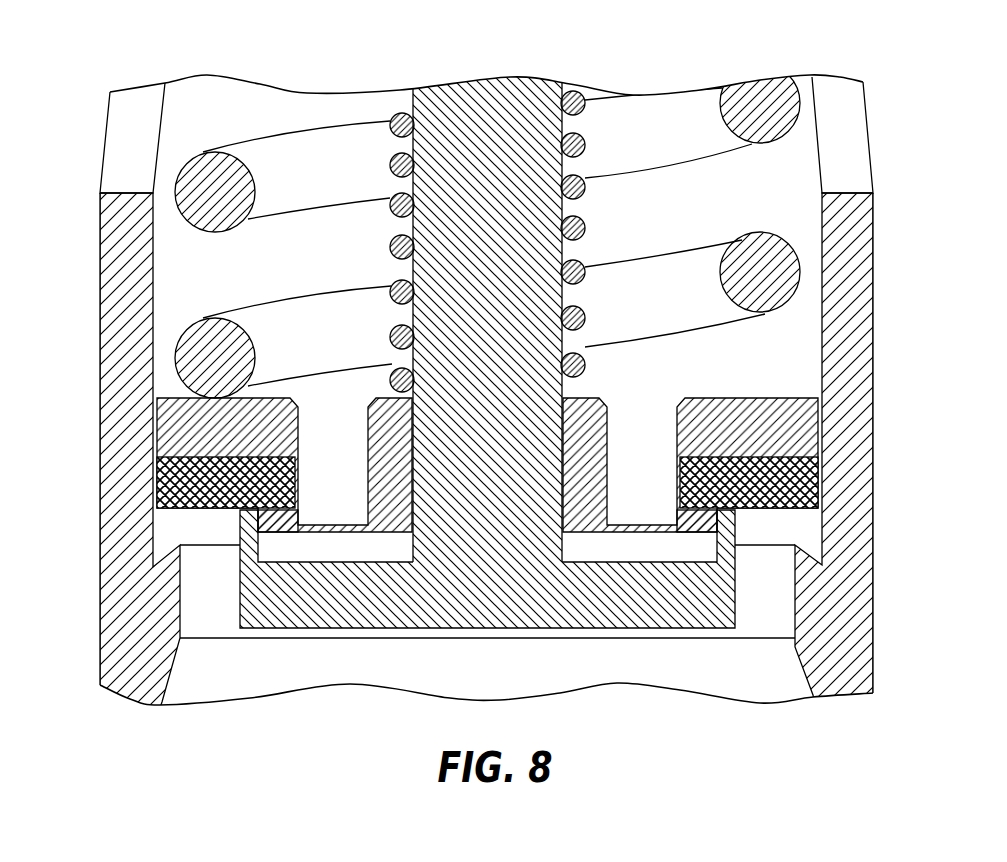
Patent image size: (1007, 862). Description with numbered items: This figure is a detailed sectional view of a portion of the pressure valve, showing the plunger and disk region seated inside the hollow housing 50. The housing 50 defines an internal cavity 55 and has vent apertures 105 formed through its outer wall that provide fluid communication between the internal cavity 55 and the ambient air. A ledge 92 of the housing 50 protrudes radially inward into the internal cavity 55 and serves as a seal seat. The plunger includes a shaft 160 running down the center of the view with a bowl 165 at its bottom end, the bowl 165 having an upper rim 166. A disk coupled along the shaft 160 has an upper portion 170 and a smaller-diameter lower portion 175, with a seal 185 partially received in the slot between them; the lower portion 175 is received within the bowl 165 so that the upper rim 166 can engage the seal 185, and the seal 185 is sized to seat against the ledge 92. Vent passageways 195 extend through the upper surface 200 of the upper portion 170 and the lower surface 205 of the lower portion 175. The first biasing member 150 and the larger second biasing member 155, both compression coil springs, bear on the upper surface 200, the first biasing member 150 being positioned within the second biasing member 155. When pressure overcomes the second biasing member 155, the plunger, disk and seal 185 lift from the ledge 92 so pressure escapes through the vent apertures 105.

The housing 50 is at (873, 378).
The internal cavity 55 is at (258, 108).
The ledge 92 is at (797, 590).
The vent apertures 105 is at (128, 152).
The first biasing member 150 is at (390, 160).
The second biasing member 155 is at (687, 130).
The shaft 160 is at (482, 128).
The bowl 165 is at (323, 597).
The upper rim 166 is at (237, 495).
The upper portion 170 is at (197, 428).
The lower portion 175 is at (278, 520).
The seal 185 is at (793, 487).
The vent passageways 195 is at (333, 425).
The upper surface 200 is at (750, 397).
The lower surface 205 is at (710, 531).